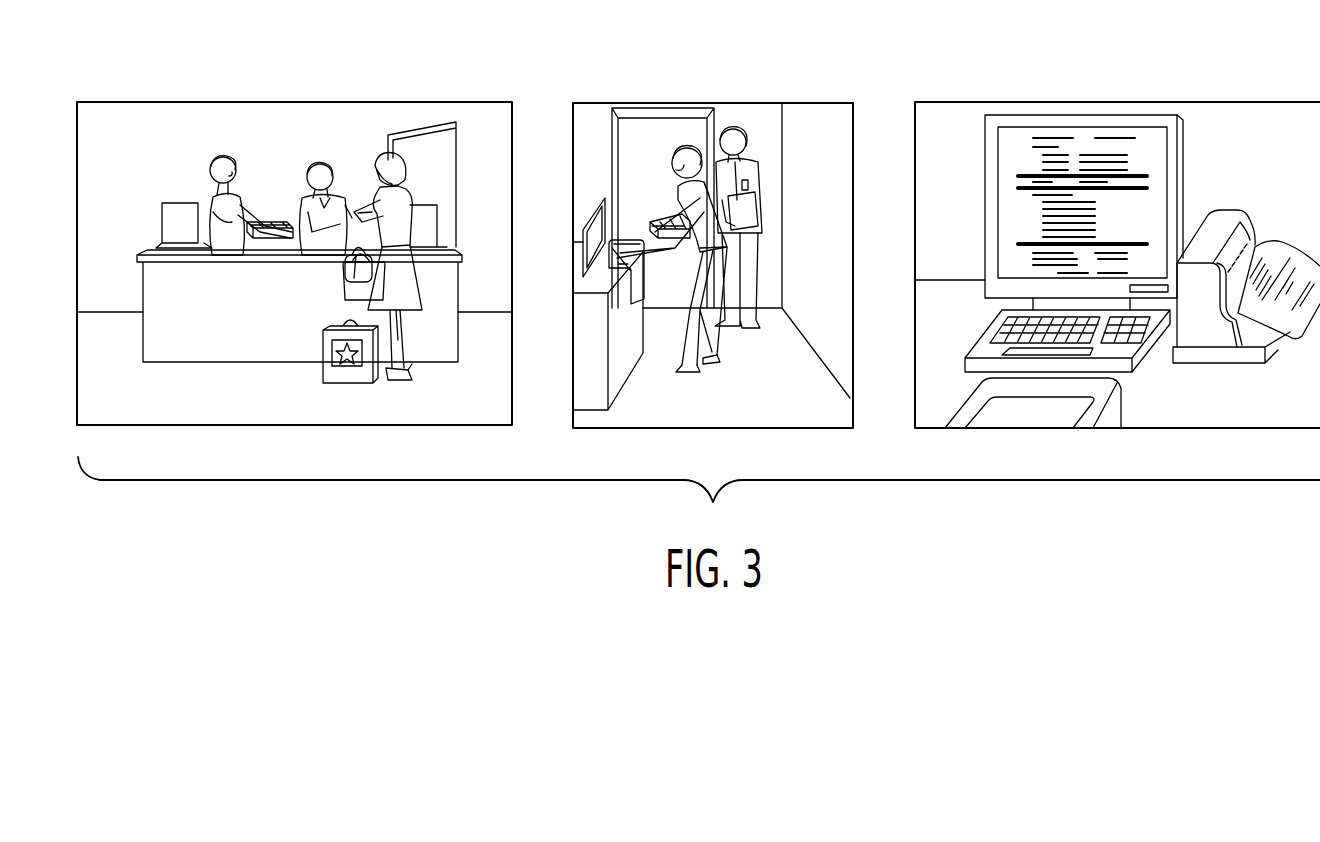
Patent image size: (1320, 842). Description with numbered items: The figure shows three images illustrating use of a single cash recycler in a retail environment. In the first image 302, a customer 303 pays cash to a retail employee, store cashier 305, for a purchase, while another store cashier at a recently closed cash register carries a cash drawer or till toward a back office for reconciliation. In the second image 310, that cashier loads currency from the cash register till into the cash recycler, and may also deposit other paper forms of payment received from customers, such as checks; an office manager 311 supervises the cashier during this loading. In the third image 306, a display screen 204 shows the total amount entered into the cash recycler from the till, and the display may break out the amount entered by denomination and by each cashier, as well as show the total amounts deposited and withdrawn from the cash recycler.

The image 302 is at (113, 125).
The store cashier 305 is at (310, 162).
The customer 303 is at (407, 290).
The image 310 is at (807, 123).
The office manager 311 is at (757, 232).
The computer display 204 is at (1020, 147).
The image 306 is at (1277, 118).